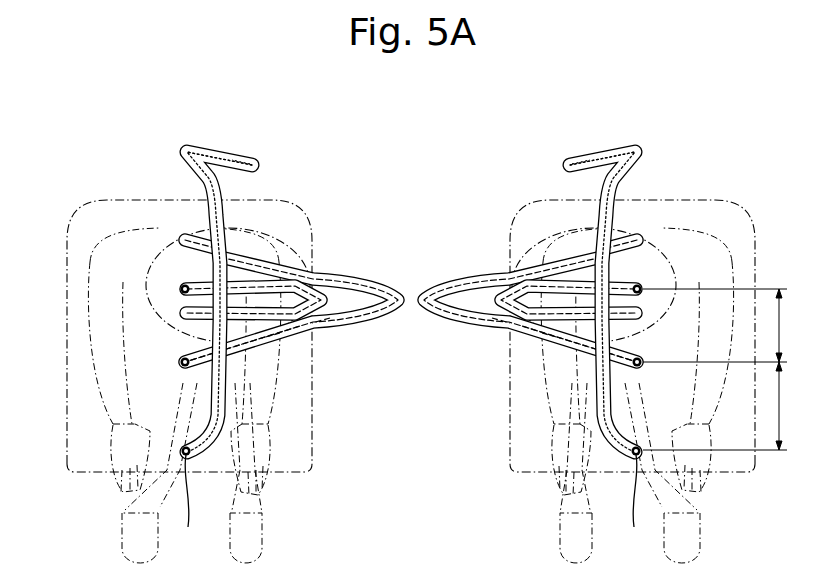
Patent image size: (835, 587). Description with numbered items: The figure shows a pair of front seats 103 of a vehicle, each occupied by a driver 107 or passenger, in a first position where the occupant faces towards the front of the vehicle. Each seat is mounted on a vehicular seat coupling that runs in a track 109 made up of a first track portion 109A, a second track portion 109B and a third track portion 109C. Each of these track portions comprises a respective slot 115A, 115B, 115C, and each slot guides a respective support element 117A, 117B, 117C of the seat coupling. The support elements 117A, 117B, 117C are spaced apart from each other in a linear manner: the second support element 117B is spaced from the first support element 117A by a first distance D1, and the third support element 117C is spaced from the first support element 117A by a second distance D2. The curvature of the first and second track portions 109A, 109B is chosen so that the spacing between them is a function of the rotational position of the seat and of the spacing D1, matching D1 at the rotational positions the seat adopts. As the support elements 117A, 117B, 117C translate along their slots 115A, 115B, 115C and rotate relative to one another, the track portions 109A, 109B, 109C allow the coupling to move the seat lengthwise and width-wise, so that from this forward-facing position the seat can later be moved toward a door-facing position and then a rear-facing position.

The front seat 103 is at (88, 476).
The driver 107 is at (258, 450).
The track 109 is at (270, 242).
The first track portion 109A is at (233, 357).
The second track portion 109B is at (350, 273).
The third track portion 109C is at (213, 146).
The slot 115A is at (270, 340).
The slot 115B is at (320, 327).
The slot 115C is at (241, 159).
The first support element 117A is at (185, 362).
The second support element 117B is at (185, 289).
The third support element 117C is at (412, 504).
The first distance D1 is at (727, 325).
The second distance D2 is at (727, 406).